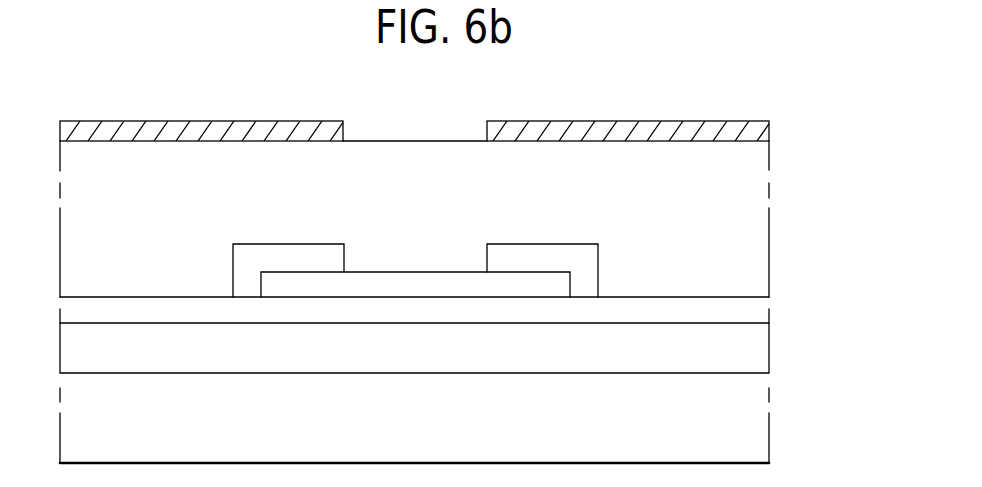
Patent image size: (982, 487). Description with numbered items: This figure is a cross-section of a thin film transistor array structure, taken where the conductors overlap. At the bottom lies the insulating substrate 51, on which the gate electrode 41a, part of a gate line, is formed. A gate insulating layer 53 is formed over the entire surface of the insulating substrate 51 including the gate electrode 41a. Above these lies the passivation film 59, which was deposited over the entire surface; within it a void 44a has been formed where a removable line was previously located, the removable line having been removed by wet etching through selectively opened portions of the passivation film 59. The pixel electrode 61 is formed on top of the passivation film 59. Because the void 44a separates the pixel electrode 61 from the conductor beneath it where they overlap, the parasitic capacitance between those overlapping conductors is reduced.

The pixel electrode 61 is at (770, 124).
The passivation film 59 is at (758, 253).
The void 44a is at (508, 256).
The gate insulating layer 53 is at (758, 313).
The gate electrode 41a is at (758, 353).
The insulating substrate 51 is at (758, 424).